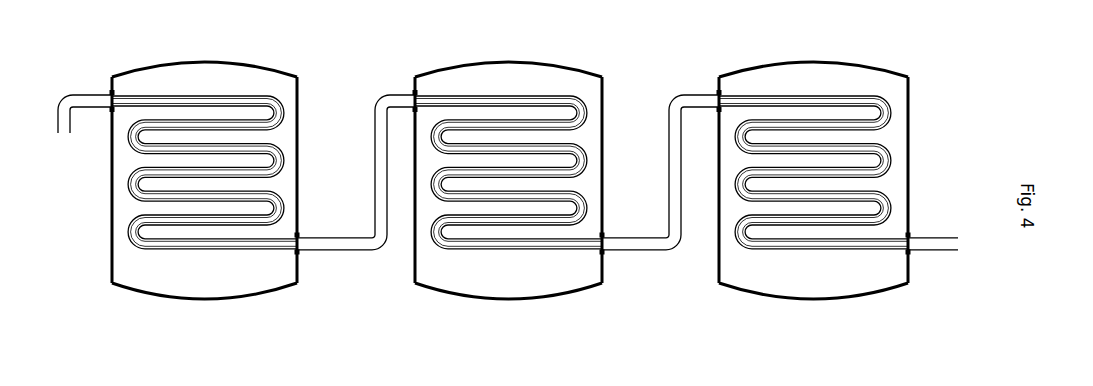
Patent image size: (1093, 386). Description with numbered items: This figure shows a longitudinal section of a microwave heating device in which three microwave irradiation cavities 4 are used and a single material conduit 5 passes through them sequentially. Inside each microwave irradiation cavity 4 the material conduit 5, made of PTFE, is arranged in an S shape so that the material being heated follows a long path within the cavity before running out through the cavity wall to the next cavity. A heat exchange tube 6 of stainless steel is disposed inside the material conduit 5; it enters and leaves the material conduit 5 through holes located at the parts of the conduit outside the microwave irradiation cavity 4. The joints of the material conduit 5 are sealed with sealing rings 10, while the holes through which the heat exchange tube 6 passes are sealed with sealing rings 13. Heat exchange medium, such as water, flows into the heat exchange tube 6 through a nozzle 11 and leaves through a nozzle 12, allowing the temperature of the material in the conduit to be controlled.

The microwave irradiation cavity 4 is at (195, 307).
The material conduit 5 is at (57, 102).
The heat exchange tube 6 is at (98, 89).
The sealing ring 10 is at (118, 91).
The nozzle 11 is at (305, 241).
The nozzle 12 is at (94, 88).
The sealing ring 13 is at (108, 95).